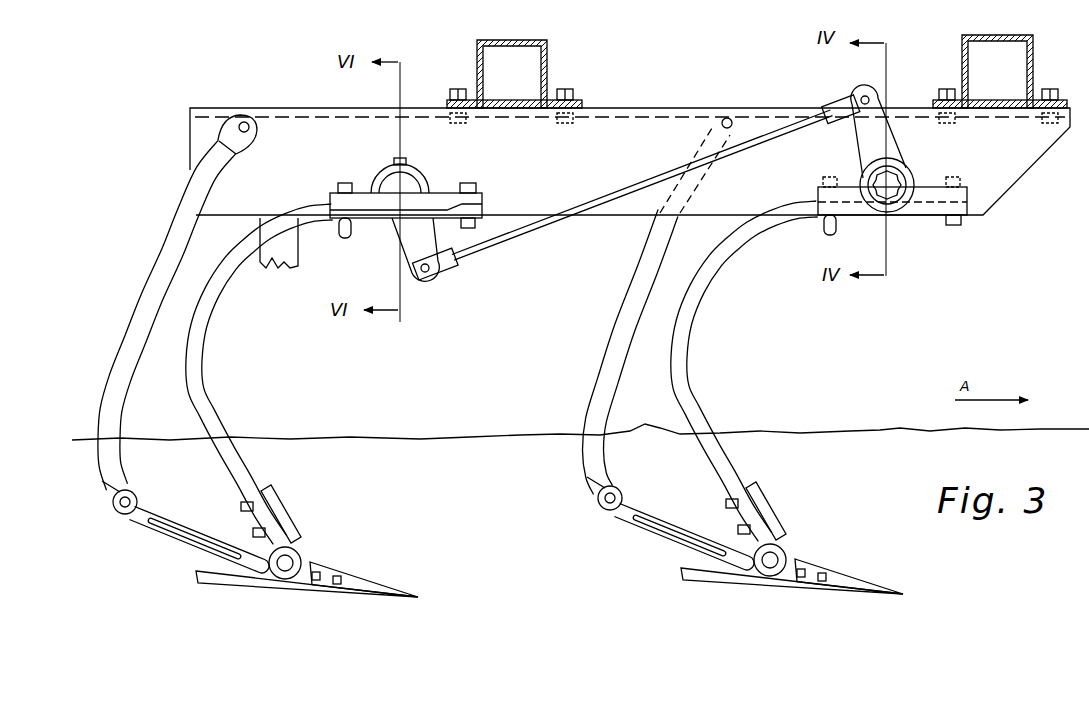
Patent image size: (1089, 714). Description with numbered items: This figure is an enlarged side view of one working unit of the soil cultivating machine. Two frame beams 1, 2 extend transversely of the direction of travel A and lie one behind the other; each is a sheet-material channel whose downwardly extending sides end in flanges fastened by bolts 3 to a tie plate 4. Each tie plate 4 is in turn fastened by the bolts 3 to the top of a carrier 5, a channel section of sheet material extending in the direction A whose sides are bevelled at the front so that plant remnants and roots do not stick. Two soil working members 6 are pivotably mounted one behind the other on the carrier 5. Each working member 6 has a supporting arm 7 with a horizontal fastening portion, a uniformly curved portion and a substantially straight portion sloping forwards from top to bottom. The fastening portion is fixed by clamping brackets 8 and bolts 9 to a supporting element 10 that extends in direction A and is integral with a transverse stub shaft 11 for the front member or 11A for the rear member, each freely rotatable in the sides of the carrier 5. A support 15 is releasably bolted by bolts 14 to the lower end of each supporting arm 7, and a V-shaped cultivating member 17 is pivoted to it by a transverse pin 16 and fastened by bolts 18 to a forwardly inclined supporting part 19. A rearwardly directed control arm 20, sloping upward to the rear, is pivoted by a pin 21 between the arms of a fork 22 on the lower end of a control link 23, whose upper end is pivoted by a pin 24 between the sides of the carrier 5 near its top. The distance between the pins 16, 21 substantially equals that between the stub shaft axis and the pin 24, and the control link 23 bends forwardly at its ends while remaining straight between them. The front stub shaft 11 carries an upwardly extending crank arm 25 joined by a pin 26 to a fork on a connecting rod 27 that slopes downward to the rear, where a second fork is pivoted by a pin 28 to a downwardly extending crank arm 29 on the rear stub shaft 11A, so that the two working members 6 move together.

The frame beam 1 is at (962, 50).
The frame beam 2 is at (477, 57).
The bolts 3 is at (458, 89).
The tie plate 4 is at (516, 90).
The carrier 5 is at (648, 118).
The soil working member 6 is at (502, 372).
The supporting arm 7 is at (217, 292).
The clamping brackets 8 is at (343, 183).
The bolts 9 is at (470, 183).
The supporting element 10 is at (432, 192).
The stub shaft 11 is at (902, 173).
The stub shaft 11A is at (395, 166).
The bolts 14 is at (253, 531).
The support 15 is at (291, 537).
The pin 16 is at (293, 558).
The cultivating member 17 is at (390, 590).
The bolts 18 is at (316, 584).
The supporting part 19 is at (340, 567).
The control arm 20 is at (165, 517).
The pin 21 is at (116, 509).
The fork 22 is at (110, 489).
The control link 23 is at (143, 304).
The pin 24 is at (252, 129).
The crank arm 25 is at (862, 142).
The pin 26 is at (862, 93).
The connecting rod 27 is at (642, 181).
The pin 28 is at (430, 278).
The crank arm 29 is at (412, 240).